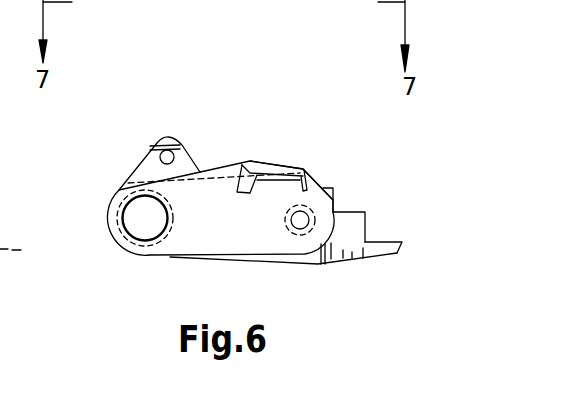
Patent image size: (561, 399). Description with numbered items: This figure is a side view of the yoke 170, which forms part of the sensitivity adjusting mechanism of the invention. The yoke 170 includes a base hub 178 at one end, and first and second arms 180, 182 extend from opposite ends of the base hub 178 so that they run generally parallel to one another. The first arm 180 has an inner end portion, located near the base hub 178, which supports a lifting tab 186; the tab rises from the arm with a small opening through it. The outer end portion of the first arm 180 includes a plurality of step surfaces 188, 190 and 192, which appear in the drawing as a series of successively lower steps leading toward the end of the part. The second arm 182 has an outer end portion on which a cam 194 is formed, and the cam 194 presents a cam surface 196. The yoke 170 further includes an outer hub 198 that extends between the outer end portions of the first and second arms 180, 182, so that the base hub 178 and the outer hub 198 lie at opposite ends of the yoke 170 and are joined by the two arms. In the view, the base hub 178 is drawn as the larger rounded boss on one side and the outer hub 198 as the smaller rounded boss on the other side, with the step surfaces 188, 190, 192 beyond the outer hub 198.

The yoke 170 is at (133, 130).
The base hub 178 is at (117, 188).
The first arm 180 is at (212, 160).
The second arm 182 is at (241, 158).
The lifting tab 186 is at (153, 142).
The step surface 188 is at (326, 189).
The step surface 190 is at (350, 212).
The step surface 192 is at (383, 241).
The cam 194 is at (234, 181).
The cam surface 196 is at (277, 160).
The outer hub 198 is at (293, 222).